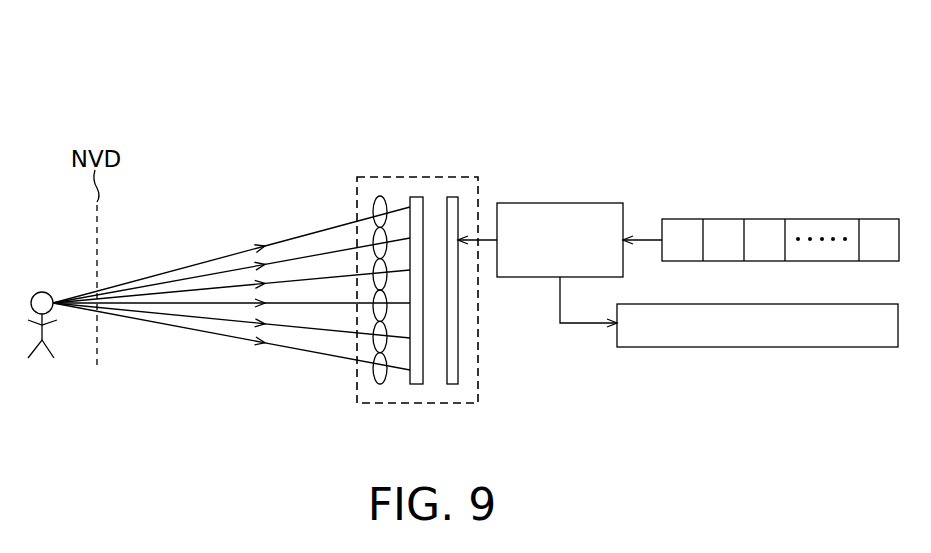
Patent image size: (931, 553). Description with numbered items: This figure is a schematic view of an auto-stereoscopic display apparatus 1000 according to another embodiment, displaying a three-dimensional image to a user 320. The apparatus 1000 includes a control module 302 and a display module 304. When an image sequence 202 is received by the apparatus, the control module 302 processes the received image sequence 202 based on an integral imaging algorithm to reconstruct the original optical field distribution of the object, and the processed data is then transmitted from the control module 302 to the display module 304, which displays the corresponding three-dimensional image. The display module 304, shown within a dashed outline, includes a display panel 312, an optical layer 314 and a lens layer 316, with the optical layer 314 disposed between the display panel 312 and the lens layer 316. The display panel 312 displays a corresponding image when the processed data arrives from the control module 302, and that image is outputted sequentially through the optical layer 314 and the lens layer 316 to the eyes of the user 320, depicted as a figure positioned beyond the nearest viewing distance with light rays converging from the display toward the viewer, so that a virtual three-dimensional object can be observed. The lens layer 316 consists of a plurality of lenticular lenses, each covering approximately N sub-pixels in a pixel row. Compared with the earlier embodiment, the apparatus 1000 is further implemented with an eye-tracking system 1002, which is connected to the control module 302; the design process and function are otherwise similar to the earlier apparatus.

The auto-stereoscopic display apparatus 1000 is at (407, 97).
The display module 304 is at (444, 175).
The control module 302 is at (561, 201).
The image sequence 202 is at (725, 218).
The user 320 is at (45, 289).
The display panel 312 is at (458, 349).
The optical layer 314 is at (421, 385).
The lens layer 316 is at (380, 385).
The eye-tracking system 1002 is at (758, 348).